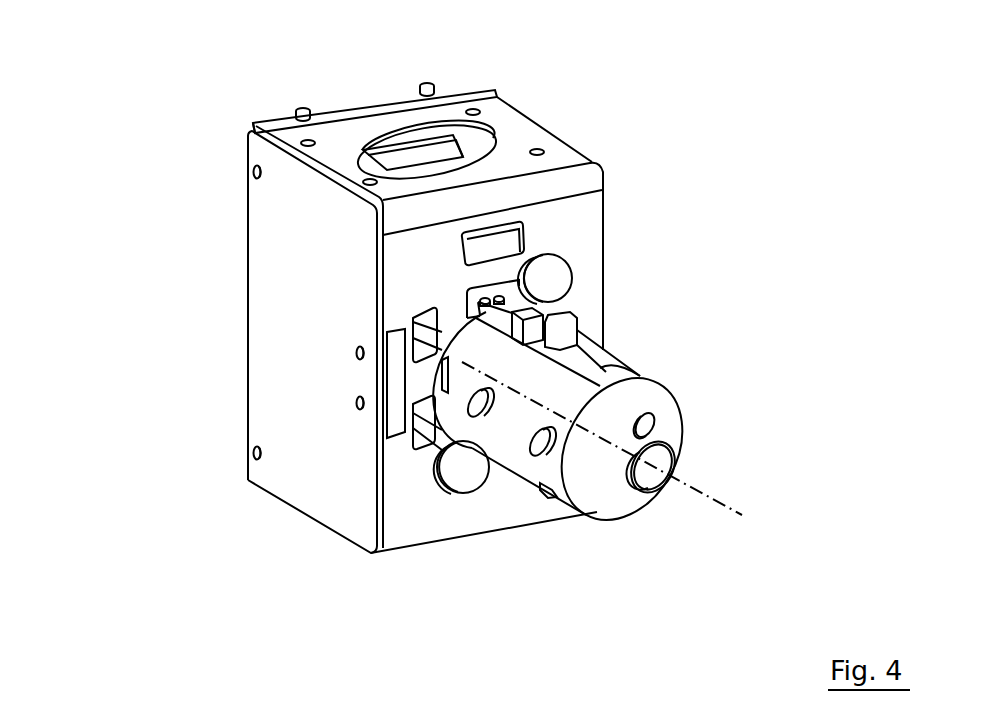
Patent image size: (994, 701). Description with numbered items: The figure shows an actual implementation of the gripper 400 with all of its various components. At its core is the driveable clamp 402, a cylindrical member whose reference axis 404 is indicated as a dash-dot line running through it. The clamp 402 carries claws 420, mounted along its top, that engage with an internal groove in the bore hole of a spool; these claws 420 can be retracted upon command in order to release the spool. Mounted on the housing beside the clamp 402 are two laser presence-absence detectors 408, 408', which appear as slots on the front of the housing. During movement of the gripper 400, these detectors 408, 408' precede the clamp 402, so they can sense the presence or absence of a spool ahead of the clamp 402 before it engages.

The gripper 400 is at (205, 138).
The driveable clamp 402 is at (632, 370).
The reference axis 404 is at (718, 498).
The laser presence-absence detector 408 is at (290, 298).
The laser presence-absence detector 408' is at (286, 455).
The claws 420 is at (565, 333).